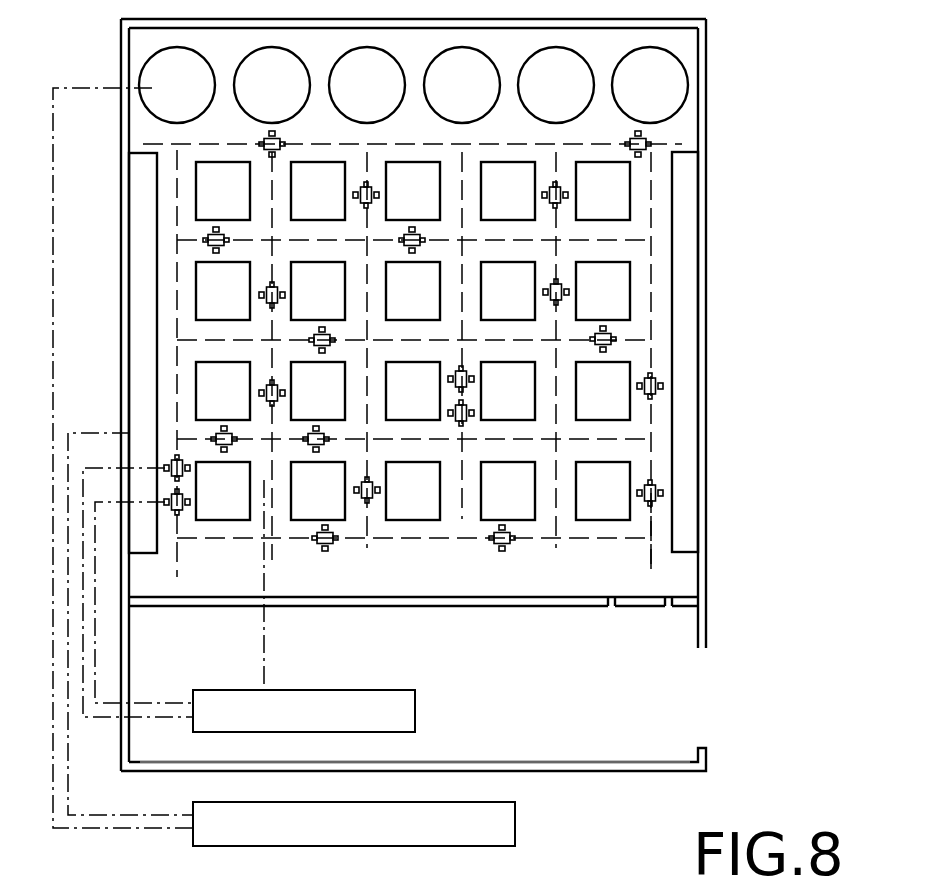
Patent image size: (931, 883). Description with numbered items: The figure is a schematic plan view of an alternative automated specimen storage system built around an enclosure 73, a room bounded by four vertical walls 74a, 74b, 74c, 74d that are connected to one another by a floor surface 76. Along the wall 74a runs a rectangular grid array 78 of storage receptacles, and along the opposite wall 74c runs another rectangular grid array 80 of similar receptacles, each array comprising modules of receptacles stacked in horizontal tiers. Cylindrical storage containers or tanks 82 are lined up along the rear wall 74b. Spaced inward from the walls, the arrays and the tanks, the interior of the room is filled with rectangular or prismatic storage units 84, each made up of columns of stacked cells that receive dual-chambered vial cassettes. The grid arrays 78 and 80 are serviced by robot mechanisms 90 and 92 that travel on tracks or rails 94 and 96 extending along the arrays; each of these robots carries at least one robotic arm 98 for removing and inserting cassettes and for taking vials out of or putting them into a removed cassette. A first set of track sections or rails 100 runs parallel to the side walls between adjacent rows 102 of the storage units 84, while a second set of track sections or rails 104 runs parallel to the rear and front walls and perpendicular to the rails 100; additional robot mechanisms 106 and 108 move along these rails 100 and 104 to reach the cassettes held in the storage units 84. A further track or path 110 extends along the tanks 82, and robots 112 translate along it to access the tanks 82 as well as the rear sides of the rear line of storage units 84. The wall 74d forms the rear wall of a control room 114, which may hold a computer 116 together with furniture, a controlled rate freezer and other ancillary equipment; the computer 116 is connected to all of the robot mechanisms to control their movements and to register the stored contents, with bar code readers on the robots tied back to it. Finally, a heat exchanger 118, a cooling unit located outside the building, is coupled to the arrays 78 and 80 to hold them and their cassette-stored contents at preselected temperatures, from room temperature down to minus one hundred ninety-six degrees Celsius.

The enclosure 73 is at (707, 580).
The vertical wall 74a is at (120, 272).
The rear wall 74b is at (153, 30).
The vertical wall 74c is at (705, 214).
The wall 74d is at (475, 607).
The floor surface 76 is at (663, 427).
The rectangular grid array 78 is at (143, 182).
The rectangular grid array 80 is at (688, 317).
The cylindrical storage containers or tanks 82 is at (563, 83).
The storage units 84 is at (210, 277).
The robot mechanism 90 is at (177, 458).
The robot mechanism 92 is at (658, 502).
The track or rail 94 is at (177, 357).
The track or rail 96 is at (653, 362).
The robotic arm 98 is at (658, 487).
The track sections or rails 100 is at (462, 522).
The rows of storage units 102 is at (592, 540).
The track sections or rails 104 is at (620, 242).
The robot mechanism 106 is at (565, 196).
The robot mechanism 108 is at (317, 440).
The track section or rail 110 is at (682, 144).
The robots 112 is at (267, 143).
The control room 114 is at (563, 729).
The computer 116 is at (250, 690).
The heat exchanger 118 is at (515, 823).